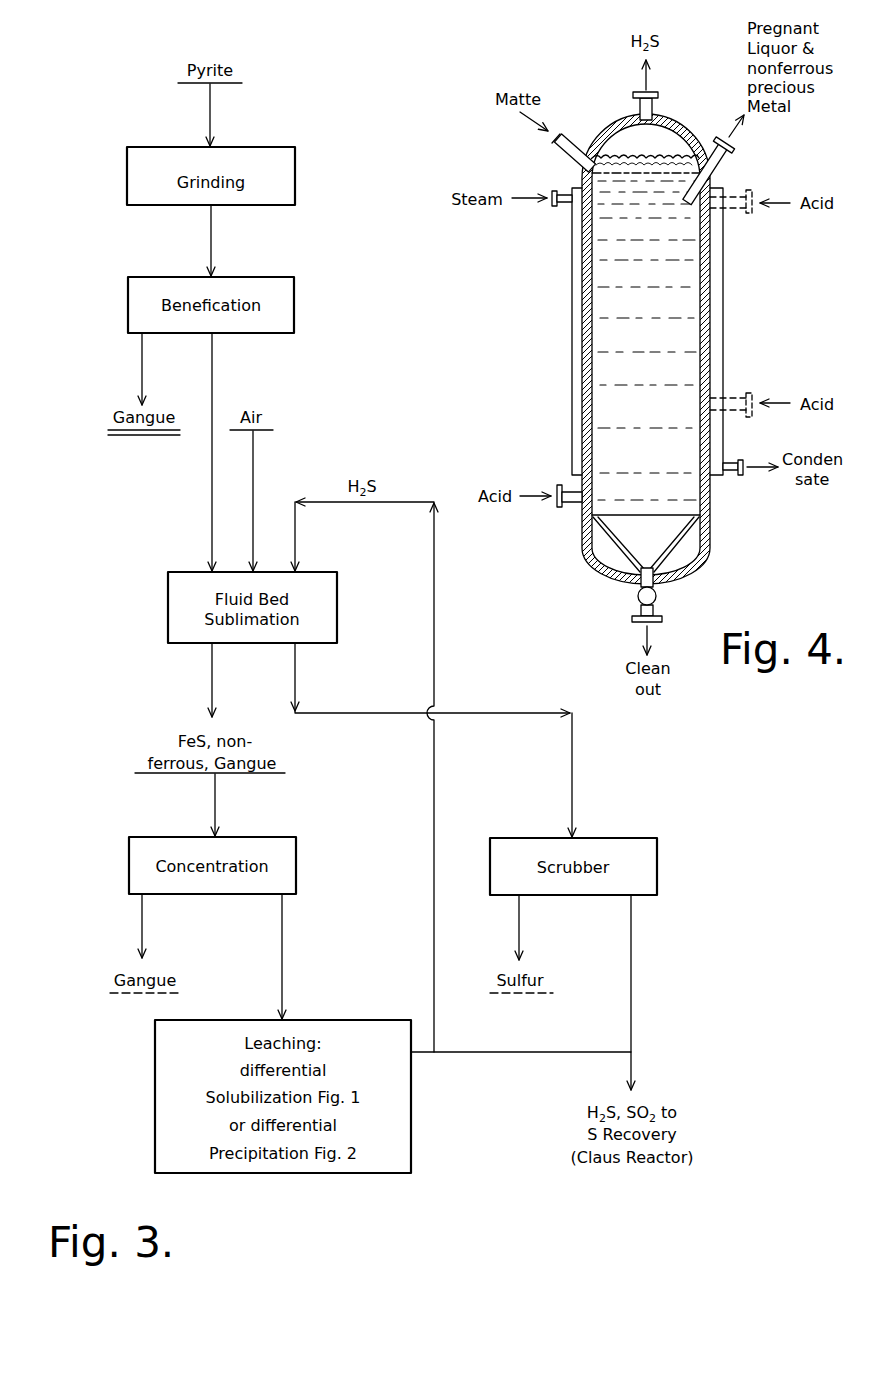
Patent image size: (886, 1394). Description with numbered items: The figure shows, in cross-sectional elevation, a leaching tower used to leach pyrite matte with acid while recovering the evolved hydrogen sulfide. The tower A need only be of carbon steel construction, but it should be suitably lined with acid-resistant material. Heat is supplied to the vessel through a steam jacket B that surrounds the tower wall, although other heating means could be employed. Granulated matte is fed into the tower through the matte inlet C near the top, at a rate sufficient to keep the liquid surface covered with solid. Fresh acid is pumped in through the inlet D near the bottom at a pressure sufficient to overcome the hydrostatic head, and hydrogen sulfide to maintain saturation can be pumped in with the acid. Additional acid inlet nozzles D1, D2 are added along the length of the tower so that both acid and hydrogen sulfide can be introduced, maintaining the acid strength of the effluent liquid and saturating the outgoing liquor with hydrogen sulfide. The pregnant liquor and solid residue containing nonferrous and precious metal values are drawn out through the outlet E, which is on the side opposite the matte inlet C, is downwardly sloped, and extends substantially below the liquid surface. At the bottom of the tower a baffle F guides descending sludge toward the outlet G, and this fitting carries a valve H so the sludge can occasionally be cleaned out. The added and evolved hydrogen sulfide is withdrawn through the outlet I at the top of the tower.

The tower A is at (686, 124).
The steam jacket B is at (723, 320).
The matte inlet C is at (574, 137).
The acid inlet D is at (556, 483).
The additional acid inlet nozzle D1 is at (752, 190).
The additional acid inlet nozzle D2 is at (752, 393).
The outlet E is at (722, 164).
The baffle F is at (677, 515).
The outlet G is at (655, 608).
The valve H is at (638, 596).
The outlet I is at (656, 107).